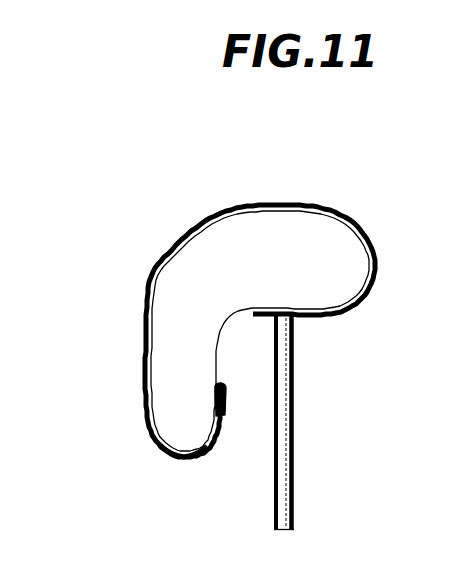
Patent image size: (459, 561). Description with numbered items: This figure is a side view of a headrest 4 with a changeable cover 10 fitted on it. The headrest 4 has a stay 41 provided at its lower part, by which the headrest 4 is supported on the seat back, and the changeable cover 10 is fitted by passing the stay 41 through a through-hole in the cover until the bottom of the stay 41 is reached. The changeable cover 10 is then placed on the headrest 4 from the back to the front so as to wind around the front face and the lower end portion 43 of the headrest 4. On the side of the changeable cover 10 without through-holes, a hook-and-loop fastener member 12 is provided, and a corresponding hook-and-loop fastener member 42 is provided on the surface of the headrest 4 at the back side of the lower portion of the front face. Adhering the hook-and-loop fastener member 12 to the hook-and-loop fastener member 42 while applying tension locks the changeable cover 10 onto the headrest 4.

The headrest 4 is at (235, 252).
The changeable cover 10 is at (143, 299).
The hook-and-loop fastener member 12 is at (226, 389).
The stay 41 is at (282, 418).
The hook-and-loop fastener member 42 is at (223, 386).
The lower end portion 43 is at (183, 436).